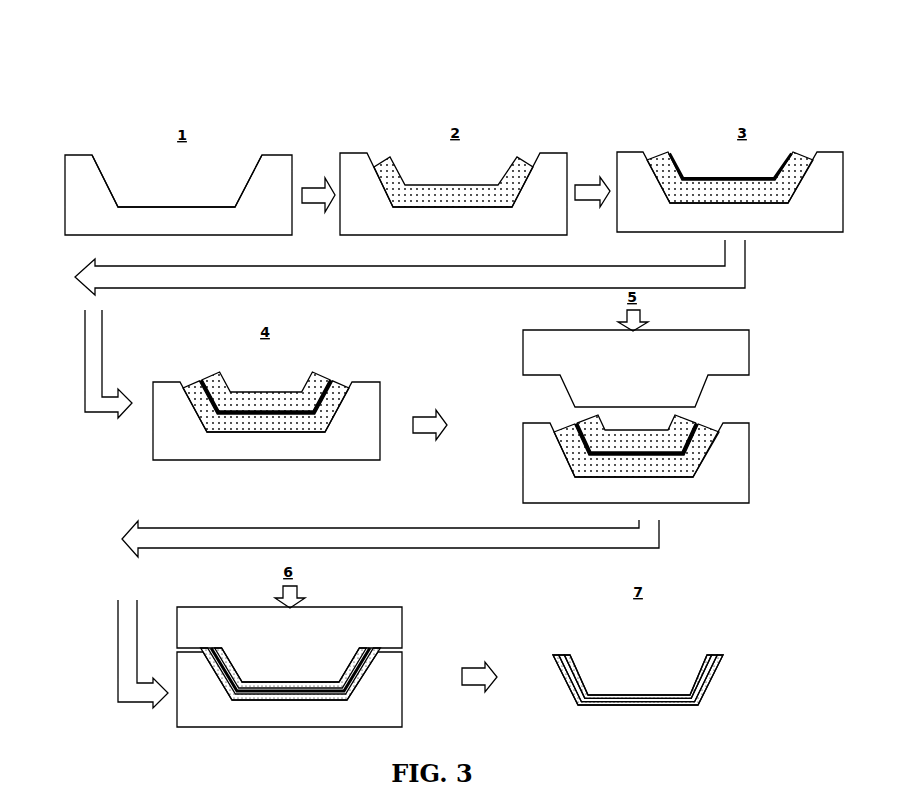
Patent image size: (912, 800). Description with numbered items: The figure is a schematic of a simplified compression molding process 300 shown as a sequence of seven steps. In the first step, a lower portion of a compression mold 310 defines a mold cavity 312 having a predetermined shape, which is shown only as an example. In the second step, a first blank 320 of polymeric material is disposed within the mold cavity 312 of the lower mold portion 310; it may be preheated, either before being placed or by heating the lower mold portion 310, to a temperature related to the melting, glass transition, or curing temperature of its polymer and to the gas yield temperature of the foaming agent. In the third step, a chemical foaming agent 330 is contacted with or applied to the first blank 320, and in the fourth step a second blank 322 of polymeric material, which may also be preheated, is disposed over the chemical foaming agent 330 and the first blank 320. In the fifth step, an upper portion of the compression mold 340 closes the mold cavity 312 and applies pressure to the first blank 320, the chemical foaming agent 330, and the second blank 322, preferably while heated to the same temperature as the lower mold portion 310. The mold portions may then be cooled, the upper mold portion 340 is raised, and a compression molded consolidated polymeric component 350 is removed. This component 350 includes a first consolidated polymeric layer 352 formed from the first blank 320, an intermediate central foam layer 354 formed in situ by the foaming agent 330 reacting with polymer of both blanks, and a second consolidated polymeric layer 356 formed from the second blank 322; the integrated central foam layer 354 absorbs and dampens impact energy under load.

The compression molding process 300 is at (103, 123).
The lower portion of a compression mold 310 is at (454, 439).
The mold cavity 312 is at (163, 207).
The first blank 320 is at (413, 183).
The second blank 322 is at (290, 392).
The chemical foaming agent 330 is at (688, 178).
The upper portion of compression mold 340 is at (636, 368).
The compression molded consolidated polymeric component 350 is at (658, 660).
The first consolidated polymeric layer 352 is at (717, 677).
The intermediate central foam layer 354 is at (717, 653).
The second consolidated polymeric layer 356 is at (708, 663).